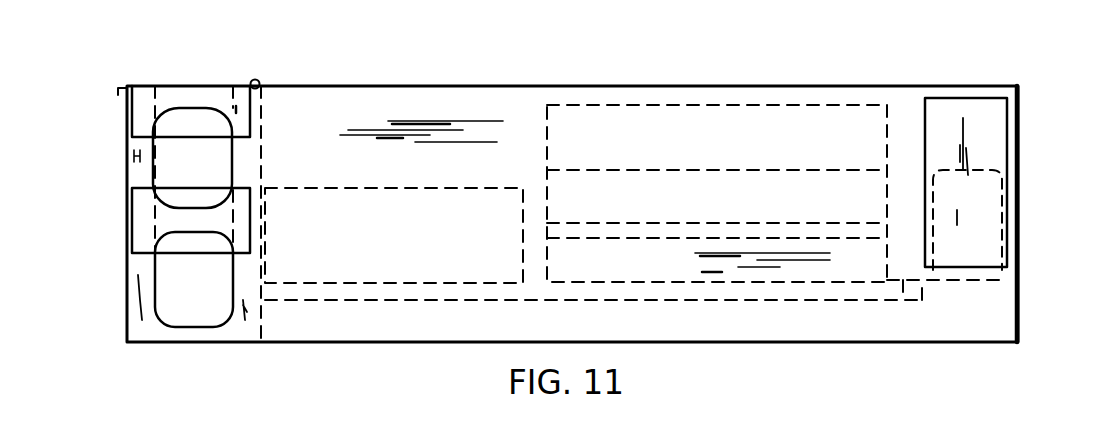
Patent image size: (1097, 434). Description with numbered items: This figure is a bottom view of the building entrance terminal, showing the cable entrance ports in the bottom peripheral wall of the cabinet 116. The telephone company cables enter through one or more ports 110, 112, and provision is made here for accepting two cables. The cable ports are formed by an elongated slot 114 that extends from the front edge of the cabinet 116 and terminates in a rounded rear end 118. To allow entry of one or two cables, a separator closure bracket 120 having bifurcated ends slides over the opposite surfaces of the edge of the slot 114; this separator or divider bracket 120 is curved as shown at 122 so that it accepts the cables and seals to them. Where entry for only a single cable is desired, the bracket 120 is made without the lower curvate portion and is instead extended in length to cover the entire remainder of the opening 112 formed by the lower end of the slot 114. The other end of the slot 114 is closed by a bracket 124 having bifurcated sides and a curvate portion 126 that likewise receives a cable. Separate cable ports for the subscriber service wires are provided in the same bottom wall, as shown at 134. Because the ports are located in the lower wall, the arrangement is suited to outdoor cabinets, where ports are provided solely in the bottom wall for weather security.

The port 110 is at (217, 172).
The port 112 is at (233, 280).
The elongated slot 114 is at (155, 96).
The cabinet 116 is at (385, 90).
The rounded rear end 118 is at (213, 318).
The separator closure bracket 120 is at (158, 207).
The curved portion 122 is at (188, 237).
The bracket 124 is at (212, 92).
The curvate portion 126 is at (182, 111).
The cable ports for service wires 134 is at (993, 143).